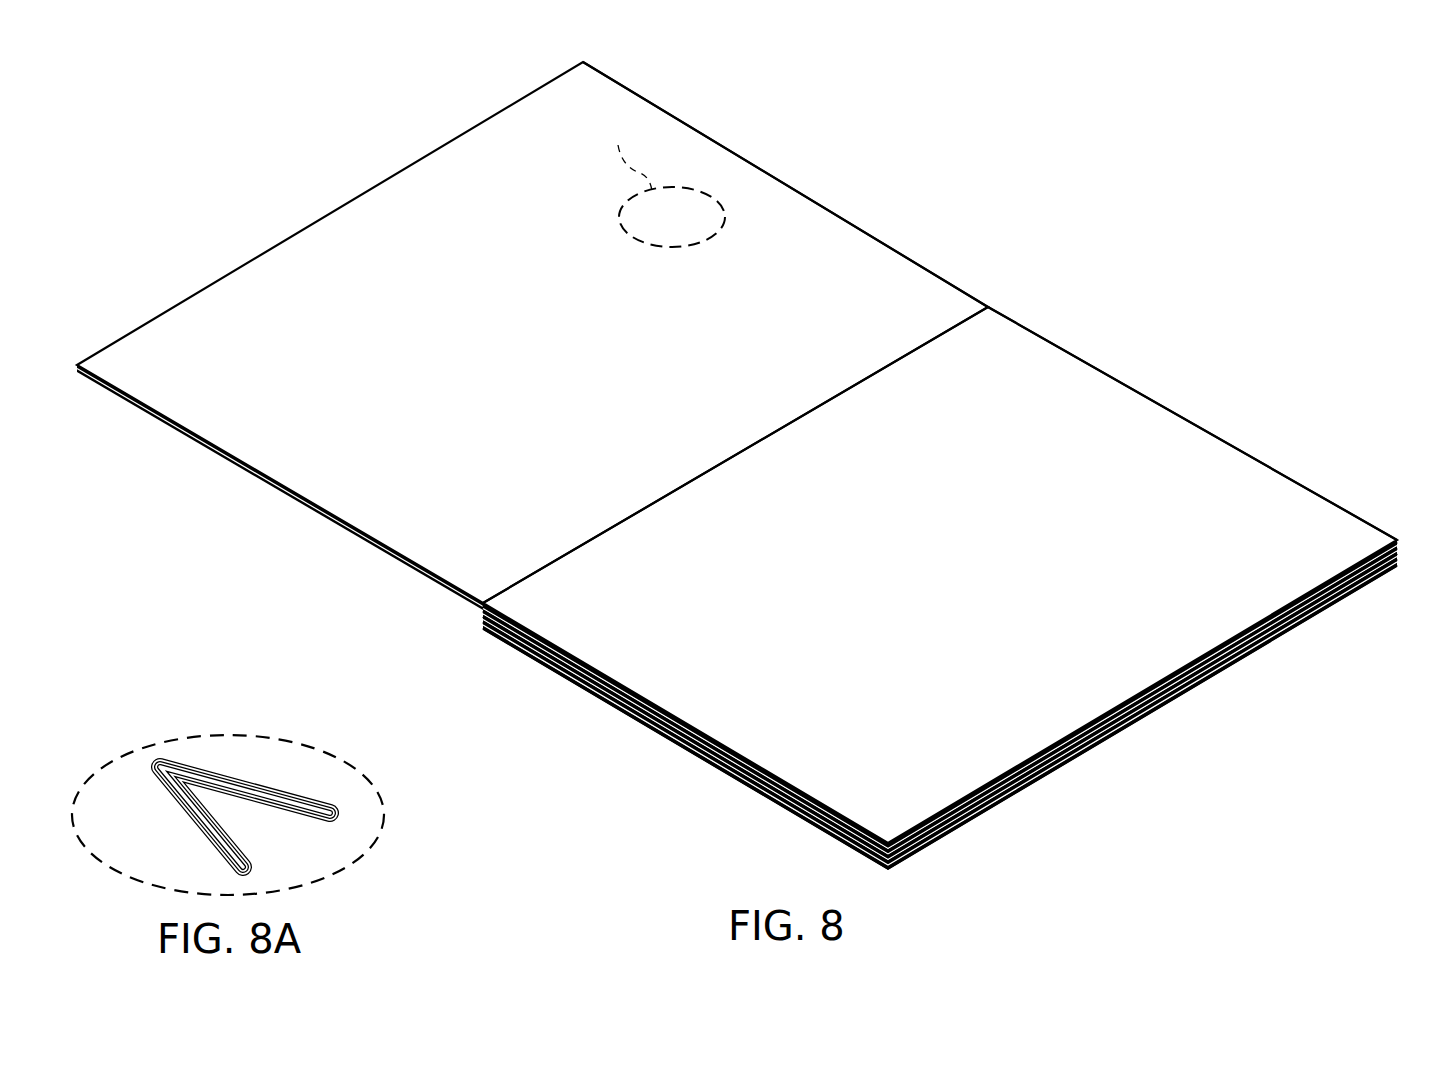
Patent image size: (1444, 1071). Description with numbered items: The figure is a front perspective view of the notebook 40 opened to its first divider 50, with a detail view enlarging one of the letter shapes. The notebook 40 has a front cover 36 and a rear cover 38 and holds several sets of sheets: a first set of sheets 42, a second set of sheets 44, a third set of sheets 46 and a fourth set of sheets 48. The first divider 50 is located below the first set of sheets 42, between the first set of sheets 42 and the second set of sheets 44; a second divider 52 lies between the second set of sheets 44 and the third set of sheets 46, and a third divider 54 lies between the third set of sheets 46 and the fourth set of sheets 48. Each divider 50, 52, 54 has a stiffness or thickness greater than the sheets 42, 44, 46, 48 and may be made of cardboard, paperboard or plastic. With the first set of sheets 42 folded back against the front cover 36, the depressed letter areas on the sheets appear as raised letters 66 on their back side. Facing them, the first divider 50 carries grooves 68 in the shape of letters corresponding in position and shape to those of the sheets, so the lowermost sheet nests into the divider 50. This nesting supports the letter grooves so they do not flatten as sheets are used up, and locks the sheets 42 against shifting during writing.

In FIG. 8, the notebook 40 is at (737, 473).
In FIG. 8, the front cover 36 is at (269, 479).
In FIG. 8, the rear cover 38 is at (944, 838).
In FIG. 8, the first set of sheets 42 is at (850, 229).
In FIG. 8, the first divider 50 is at (1030, 347).
In FIG. 8, the second set of sheets 44 is at (590, 674).
In FIG. 8, the second divider 52 is at (628, 707).
In FIG. 8, the third set of sheets 46 is at (674, 732).
In FIG. 8, the third divider 54 is at (734, 767).
In FIG. 8, the fourth set of sheets 48 is at (792, 807).
In FIG. 8, the raised letters 66 is at (511, 371).
In FIG. 8A, the raised letters 66 is at (245, 764).
In FIG. 8, the grooves 68 is at (874, 585).